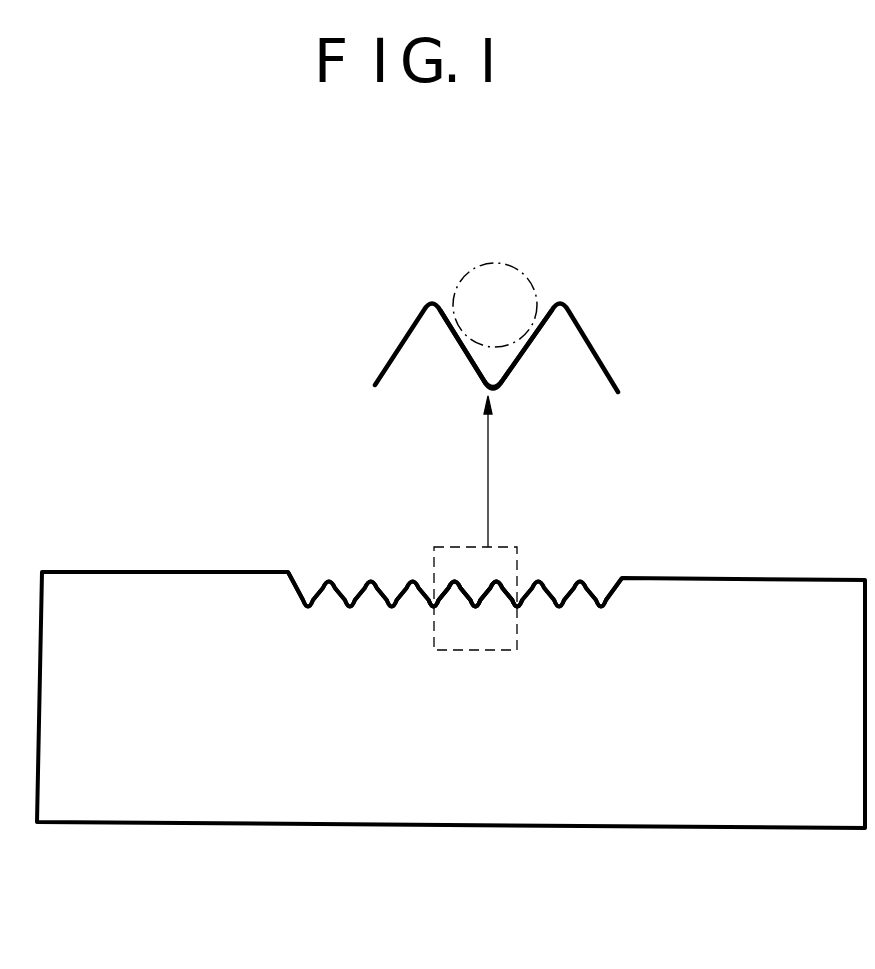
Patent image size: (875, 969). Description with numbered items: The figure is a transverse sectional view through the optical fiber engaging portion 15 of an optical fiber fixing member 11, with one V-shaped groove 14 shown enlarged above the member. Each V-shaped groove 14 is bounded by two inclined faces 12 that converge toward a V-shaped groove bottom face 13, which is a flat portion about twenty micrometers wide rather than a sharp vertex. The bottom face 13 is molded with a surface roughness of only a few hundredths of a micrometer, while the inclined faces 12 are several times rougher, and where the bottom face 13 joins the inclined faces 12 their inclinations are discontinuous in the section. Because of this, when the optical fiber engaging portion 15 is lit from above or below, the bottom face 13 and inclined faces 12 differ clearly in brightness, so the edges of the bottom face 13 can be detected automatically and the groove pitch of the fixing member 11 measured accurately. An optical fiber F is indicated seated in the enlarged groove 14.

The optical fiber fixing member 11 is at (782, 830).
The inclined face 12 is at (472, 338).
The V-shaped groove bottom face 13 is at (493, 376).
The V-shaped groove 14 is at (472, 585).
The optical fiber engaging portion 15 is at (492, 572).
The optical fiber F is at (537, 293).